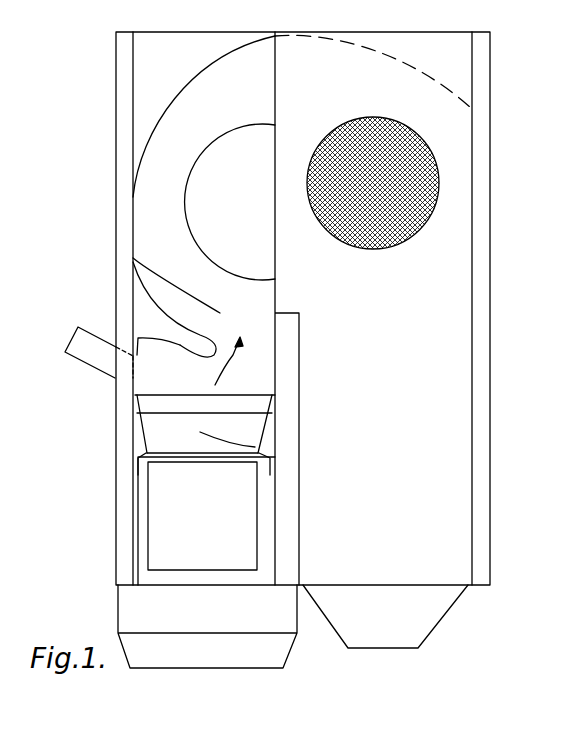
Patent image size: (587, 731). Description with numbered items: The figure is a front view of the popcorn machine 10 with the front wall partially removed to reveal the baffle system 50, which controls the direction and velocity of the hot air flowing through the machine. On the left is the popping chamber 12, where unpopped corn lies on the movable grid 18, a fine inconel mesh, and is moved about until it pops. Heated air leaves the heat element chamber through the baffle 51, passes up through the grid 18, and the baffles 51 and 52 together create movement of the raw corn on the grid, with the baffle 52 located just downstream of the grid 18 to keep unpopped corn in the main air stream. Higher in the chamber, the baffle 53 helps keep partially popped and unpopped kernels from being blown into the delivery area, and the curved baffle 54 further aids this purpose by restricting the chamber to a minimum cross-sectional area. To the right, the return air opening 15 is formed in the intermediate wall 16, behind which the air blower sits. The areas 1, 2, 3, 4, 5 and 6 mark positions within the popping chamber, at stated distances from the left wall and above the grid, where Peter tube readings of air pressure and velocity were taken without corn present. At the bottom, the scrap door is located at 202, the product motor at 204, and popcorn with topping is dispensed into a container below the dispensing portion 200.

The area 1 is at (153, 430).
The area 2 is at (255, 447).
The area 3 is at (250, 433).
The area 4 is at (257, 97).
The area 5 is at (133, 258).
The area 6 is at (198, 110).
The machine 10 is at (476, 598).
The popping chamber 12 is at (134, 197).
The return air opening 15 is at (425, 155).
The intermediate wall 16 is at (436, 270).
The grid 18 is at (148, 453).
The baffle system 50 is at (143, 517).
The baffle 51 is at (150, 551).
The baffle 52 is at (150, 398).
The baffle 53 is at (157, 320).
The baffle 54 is at (233, 157).
The dispensing portion 200 is at (418, 644).
The scrap door 202 is at (217, 658).
The product motor 204 is at (65, 345).